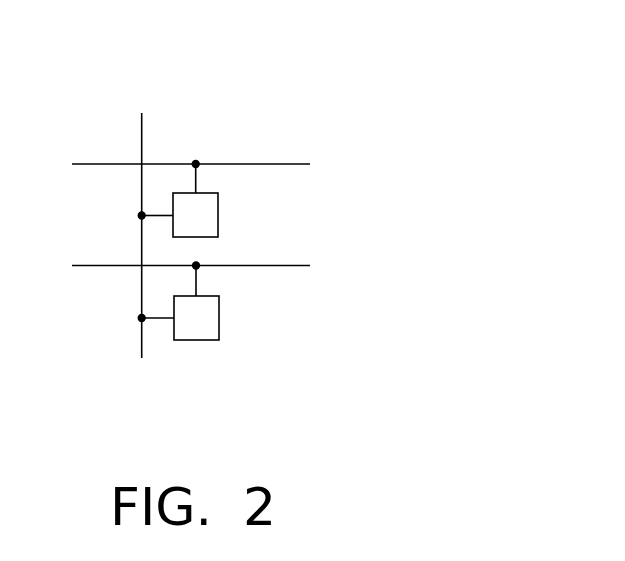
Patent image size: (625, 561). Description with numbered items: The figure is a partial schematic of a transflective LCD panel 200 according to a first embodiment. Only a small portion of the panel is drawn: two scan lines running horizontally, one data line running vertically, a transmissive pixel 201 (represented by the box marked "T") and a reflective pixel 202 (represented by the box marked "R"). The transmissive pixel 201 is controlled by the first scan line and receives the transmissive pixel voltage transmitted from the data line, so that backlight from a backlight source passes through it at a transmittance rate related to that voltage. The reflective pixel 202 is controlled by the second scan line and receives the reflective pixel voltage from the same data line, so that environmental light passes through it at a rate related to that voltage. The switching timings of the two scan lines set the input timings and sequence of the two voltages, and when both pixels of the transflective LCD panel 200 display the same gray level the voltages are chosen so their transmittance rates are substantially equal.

The transflective LCD panel 200 is at (347, 58).
The transmissive pixel 201 is at (219, 216).
The reflective pixel 202 is at (220, 319).